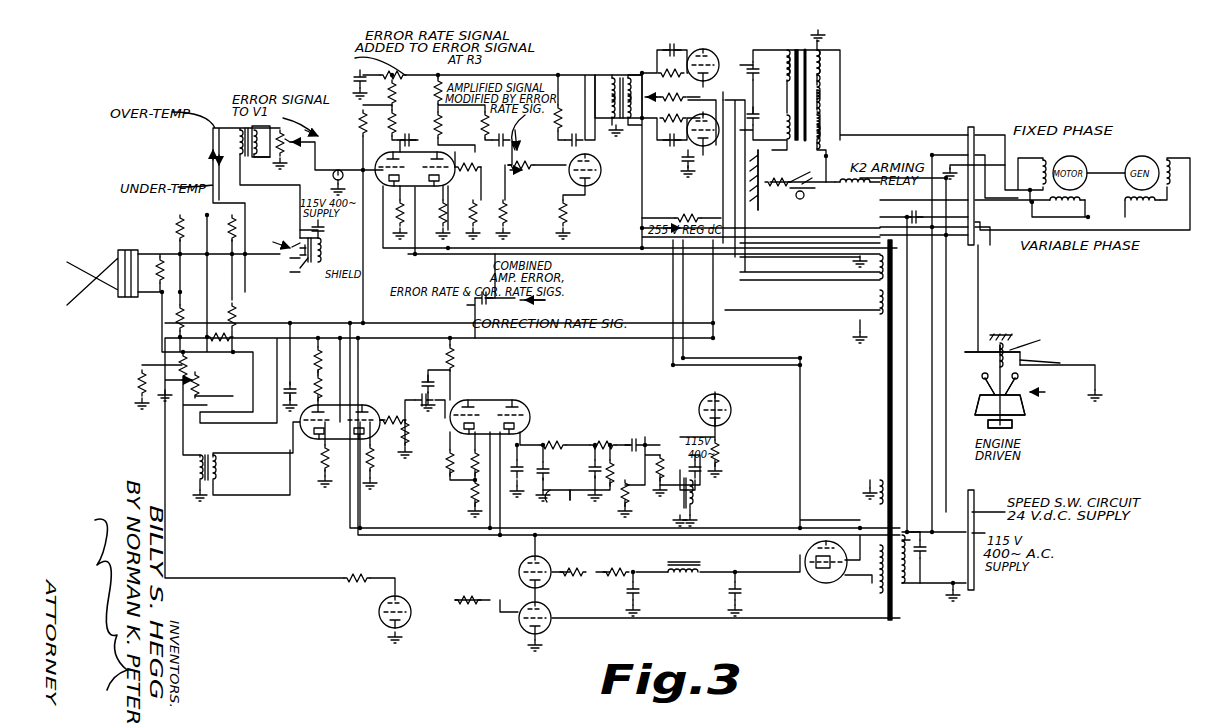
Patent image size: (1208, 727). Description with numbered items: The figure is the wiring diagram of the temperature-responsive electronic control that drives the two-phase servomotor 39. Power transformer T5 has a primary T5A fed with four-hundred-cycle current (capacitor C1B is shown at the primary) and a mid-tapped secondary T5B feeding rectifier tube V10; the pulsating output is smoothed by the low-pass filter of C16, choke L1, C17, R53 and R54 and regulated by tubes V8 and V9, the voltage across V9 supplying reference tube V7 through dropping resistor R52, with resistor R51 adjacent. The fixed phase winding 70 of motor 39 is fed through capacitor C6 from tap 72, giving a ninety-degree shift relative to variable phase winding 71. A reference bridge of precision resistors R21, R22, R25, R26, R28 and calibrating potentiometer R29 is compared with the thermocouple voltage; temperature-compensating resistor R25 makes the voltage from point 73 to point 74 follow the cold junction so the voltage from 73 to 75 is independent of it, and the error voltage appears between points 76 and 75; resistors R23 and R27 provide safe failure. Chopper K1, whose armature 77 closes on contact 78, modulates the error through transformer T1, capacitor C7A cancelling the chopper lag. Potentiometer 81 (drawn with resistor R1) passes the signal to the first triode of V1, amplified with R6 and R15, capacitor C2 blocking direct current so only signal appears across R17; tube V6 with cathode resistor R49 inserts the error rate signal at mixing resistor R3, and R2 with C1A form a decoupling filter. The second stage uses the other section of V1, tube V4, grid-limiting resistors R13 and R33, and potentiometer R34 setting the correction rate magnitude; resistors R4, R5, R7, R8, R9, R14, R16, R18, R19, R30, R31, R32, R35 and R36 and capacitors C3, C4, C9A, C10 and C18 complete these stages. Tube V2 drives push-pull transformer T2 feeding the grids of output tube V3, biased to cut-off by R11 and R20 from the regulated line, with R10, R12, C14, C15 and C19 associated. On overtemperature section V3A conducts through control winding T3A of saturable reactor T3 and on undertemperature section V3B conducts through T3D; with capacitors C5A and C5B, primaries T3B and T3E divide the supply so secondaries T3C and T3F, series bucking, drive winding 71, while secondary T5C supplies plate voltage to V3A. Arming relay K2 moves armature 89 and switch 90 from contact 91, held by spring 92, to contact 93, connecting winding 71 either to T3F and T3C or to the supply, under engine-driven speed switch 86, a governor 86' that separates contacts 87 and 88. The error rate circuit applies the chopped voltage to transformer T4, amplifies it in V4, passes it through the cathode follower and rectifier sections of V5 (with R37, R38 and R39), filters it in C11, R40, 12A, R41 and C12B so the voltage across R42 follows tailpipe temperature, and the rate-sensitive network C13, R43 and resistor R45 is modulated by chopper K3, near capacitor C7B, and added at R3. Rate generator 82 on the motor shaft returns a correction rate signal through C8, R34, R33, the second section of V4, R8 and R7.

The transformer T1 is at (255, 149).
The potentiometer R1 is at (270, 143).
The potentiometer 81 is at (287, 145).
The capacitor C1A is at (347, 79).
The resistor R2 is at (393, 67).
The resistor R3 is at (384, 93).
The resistor R4 is at (429, 91).
The resistor R5 is at (352, 123).
The resistor R6 is at (385, 123).
The resistor R7 is at (430, 125).
The resistor R8 is at (476, 125).
The resistor R9 is at (567, 118).
The capacitor C2 is at (405, 133).
The capacitor C3 is at (497, 134).
The capacitor C4 is at (585, 146).
The amplifier tube V1 is at (415, 169).
The tube V2 is at (594, 170).
The resistor R13 is at (468, 158).
The resistor R14 is at (523, 157).
The cathode resistor R15 is at (390, 213).
The resistor R16 is at (433, 213).
The resistor R17 is at (486, 213).
The resistor R18 is at (516, 213).
The resistor R19 is at (576, 213).
The push-pull transformer T2 is at (622, 75).
The resistor R10 is at (669, 67).
The capacitor C14 is at (670, 43).
The resistor R11 is at (673, 91).
The resistor R12 is at (673, 111).
The capacitor C15 is at (668, 146).
The capacitor C19 is at (702, 159).
The tube section V3A is at (709, 55).
The tube section V3B is at (703, 135).
The output tube V3 is at (714, 109).
The capacitor C5A is at (745, 64).
The capacitor C5B is at (764, 112).
The magnetic amplifier T3 is at (803, 85).
The control winding T3A is at (787, 73).
The primary winding T3B is at (822, 85).
The secondary winding T3C is at (822, 60).
The control winding T3D is at (787, 128).
The primary winding T3E is at (822, 115).
The secondary winding T3F is at (822, 130).
The resistor R20 is at (681, 208).
The contact 91 is at (775, 170).
The spring 92 is at (783, 193).
The switch 90 is at (802, 197).
The armature 89 is at (818, 190).
The contact 93 is at (826, 156).
The arming relay K2 is at (857, 171).
The capacitor C6 is at (912, 210).
The fixed phase winding 70 is at (1048, 160).
The motor 39 is at (1080, 166).
The rate generator 82 is at (1152, 156).
The variable phase winding 71 is at (1083, 204).
The secondary T5C is at (863, 284).
The power transformer T5 is at (892, 587).
The secondary T5B is at (876, 542).
The primary T5A is at (908, 585).
The tap 72 is at (926, 547).
The capacitor C1B is at (939, 557).
The rectifier tube V10 is at (819, 568).
The contact 88 is at (1010, 350).
The contact 87 is at (1020, 360).
The speed switch 86 is at (1021, 394).
The governor 86' is at (980, 411).
The bridge point 74 is at (150, 295).
The precision resistor R21 is at (165, 228).
The precision resistor R22 is at (223, 228).
The resistor R23 is at (152, 270).
The temperature compensating resistor R25 is at (193, 318).
The precision resistor R26 is at (247, 316).
The precision resistor R28 is at (222, 343).
The potentiometer R29 is at (196, 366).
The resistor R27 is at (126, 383).
The bridge point 73 is at (193, 395).
The contact 78 is at (283, 241).
The capacitor C7A is at (328, 229).
The chopper K1 is at (323, 250).
The bridge point 75 is at (277, 267).
The bridge point 76 is at (282, 270).
The armature 77 is at (292, 267).
The transformer T4 is at (214, 459).
The resistor R30 is at (332, 360).
The resistor R31 is at (332, 388).
The capacitor C9A is at (284, 381).
The amplifier tube V4 is at (340, 422).
The resistor R33 is at (391, 411).
The potentiometer R34 is at (418, 433).
The capacitor C10 is at (422, 394).
The resistor R35 is at (312, 458).
The resistor R36 is at (384, 458).
The resistor R32 is at (464, 357).
The capacitor C18 is at (442, 374).
The tube V5 is at (490, 417).
The resistor R37 is at (438, 463).
The resistor R38 is at (487, 463).
The resistor R39 is at (461, 493).
The filter resistor R40 is at (552, 437).
The filter resistor R41 is at (596, 437).
The filter capacitor C11 is at (529, 467).
The filter capacitor C12B is at (577, 476).
The resistor R42 is at (622, 473).
The filter capacitor 12A is at (553, 490).
The capacitor C13 is at (640, 434).
The resistor R43 is at (651, 468).
The potentiometer R45 is at (617, 491).
The capacitor C7B is at (711, 475).
The cathode resistor R49 is at (729, 453).
The chopper K3 is at (702, 493).
The amplifier tube V6 is at (724, 410).
The resistor R51 is at (353, 571).
The dropping resistor R52 is at (464, 593).
The reference tube V7 is at (405, 612).
The voltage regulator tube V8 is at (524, 572).
The voltage regulator tube V9 is at (545, 618).
The filter resistor R53 is at (573, 561).
The filter resistor R54 is at (616, 561).
The filter capacitor C16 is at (646, 593).
The choke L1 is at (684, 575).
The filter capacitor C17 is at (750, 593).
The capacitor C8 is at (474, 296).